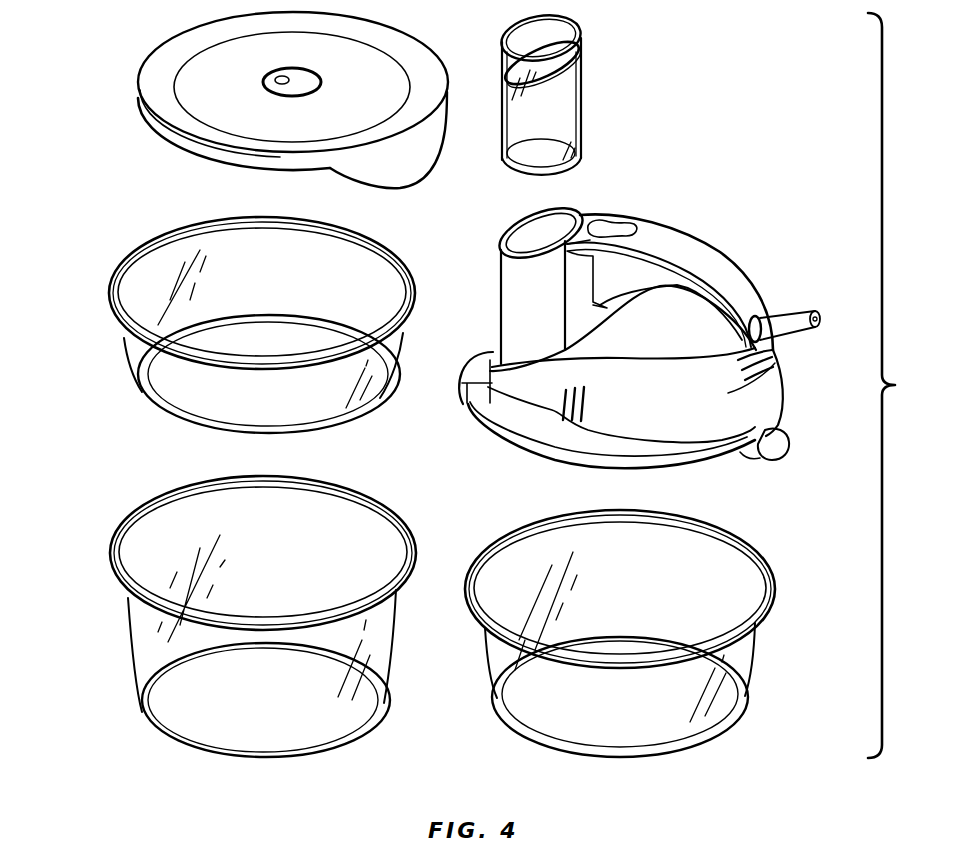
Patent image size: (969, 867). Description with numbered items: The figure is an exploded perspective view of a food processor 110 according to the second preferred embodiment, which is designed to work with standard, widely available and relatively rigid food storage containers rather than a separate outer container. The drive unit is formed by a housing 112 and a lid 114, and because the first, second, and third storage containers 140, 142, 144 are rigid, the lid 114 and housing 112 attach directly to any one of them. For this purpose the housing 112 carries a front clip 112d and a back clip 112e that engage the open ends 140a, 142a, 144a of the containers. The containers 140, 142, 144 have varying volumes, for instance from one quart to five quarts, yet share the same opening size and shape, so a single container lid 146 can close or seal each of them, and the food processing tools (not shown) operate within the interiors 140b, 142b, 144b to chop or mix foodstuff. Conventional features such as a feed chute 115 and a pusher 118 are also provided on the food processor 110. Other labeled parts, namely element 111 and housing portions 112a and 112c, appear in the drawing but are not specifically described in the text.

The food processor 110 is at (909, 385).
The power button 111 is at (600, 221).
The housing 112 is at (637, 346).
The body housing 112a is at (688, 308).
The handle 112c is at (680, 230).
The front clip 112d is at (473, 355).
The back clip 112e is at (778, 450).
The lid 114 is at (537, 431).
The feed chute 115 is at (510, 268).
The pusher 118 is at (586, 87).
The first storage container 140 is at (637, 620).
The open end of first storage container 140a is at (533, 528).
The interior of first storage container 140b is at (720, 565).
The second storage container 142 is at (224, 605).
The open end of second storage container 142a is at (161, 501).
The interior of second storage container 142b is at (145, 541).
The third storage container 144 is at (224, 313).
The open end of third storage container 144a is at (161, 240).
The interior of third storage container 144b is at (147, 276).
The container lid 146 is at (168, 57).